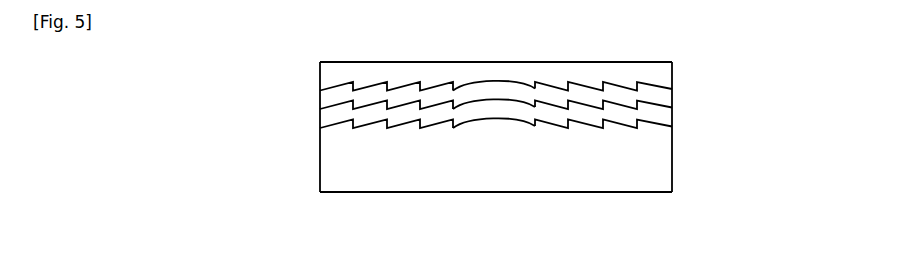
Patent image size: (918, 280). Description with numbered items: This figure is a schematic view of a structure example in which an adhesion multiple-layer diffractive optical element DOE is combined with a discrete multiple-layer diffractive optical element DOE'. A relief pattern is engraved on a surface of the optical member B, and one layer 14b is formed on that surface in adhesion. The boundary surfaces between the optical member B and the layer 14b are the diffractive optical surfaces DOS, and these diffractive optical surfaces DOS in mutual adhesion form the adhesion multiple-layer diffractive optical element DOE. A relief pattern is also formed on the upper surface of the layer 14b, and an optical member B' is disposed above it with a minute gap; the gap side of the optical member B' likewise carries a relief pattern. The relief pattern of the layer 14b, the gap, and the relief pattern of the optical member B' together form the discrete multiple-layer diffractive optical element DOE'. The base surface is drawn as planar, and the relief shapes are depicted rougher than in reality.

The layer 14b is at (672, 116).
The optical member B' is at (517, 43).
The optical member B is at (536, 182).
The discrete multiple-layer diffractive optical element DOE' is at (461, 97).
The adhesion multiple-layer diffractive optical element DOE is at (461, 130).
The diffractive optical surface DOS is at (488, 120).